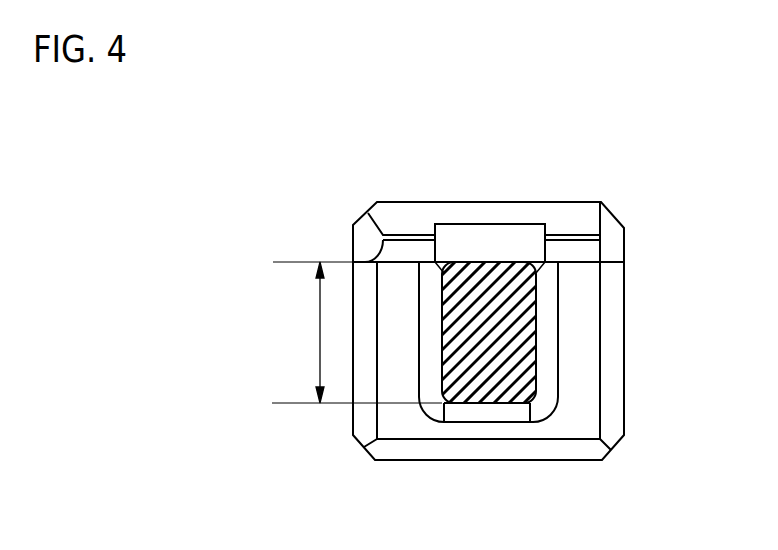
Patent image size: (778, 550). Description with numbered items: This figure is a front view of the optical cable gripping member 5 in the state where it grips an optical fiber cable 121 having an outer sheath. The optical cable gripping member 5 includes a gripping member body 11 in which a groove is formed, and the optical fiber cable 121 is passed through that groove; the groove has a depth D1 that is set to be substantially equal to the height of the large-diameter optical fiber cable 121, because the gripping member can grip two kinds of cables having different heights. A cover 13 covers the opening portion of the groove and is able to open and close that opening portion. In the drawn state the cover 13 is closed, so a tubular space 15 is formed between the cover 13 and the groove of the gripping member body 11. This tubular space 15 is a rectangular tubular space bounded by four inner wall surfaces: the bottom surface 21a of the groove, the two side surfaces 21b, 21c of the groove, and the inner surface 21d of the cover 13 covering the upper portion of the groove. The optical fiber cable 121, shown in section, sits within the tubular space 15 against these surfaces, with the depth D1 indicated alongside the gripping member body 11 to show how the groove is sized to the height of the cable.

The optical cable gripping member 5 is at (480, 299).
The gripping member body 11 is at (353, 357).
The cover 13 is at (565, 202).
The tubular space 15 is at (537, 267).
The bottom surface 21a is at (441, 372).
The side surface 21b is at (494, 322).
The side surface 21c is at (498, 378).
The inner surface of the cover 21d is at (537, 342).
The optical fiber cable 121 is at (537, 371).
The depth of the groove D1 is at (357, 332).